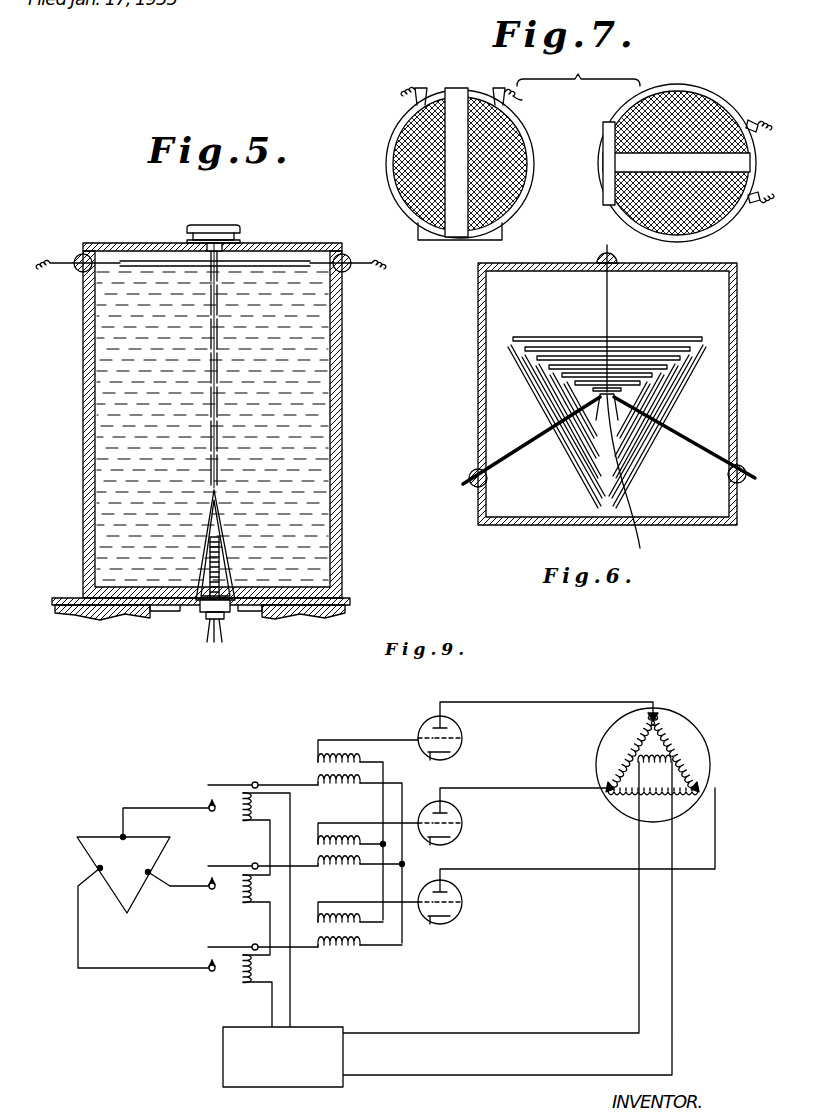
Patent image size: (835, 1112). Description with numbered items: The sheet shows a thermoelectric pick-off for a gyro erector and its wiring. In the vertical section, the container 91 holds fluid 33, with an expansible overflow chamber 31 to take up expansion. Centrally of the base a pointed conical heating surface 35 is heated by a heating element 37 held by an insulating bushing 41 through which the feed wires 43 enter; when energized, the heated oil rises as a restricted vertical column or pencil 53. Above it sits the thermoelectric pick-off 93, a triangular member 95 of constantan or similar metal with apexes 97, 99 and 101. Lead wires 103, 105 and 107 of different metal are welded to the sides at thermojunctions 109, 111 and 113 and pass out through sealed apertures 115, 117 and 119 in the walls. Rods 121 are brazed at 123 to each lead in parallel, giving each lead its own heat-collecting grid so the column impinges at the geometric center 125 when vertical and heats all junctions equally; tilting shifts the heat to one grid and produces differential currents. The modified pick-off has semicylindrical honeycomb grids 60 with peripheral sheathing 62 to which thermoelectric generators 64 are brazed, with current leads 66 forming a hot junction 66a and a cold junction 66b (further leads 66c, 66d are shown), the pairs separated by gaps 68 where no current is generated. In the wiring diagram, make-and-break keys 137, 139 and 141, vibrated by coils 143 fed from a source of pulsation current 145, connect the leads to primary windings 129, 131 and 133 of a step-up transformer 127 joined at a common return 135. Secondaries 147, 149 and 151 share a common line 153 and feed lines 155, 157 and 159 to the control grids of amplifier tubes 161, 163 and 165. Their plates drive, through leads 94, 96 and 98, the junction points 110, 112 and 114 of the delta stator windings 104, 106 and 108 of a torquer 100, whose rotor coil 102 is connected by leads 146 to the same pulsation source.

In FIG. 5, the expansible overflow chamber 31 is at (196, 607).
In FIG. 5, the fluid 33 is at (303, 396).
In FIG. 5, the conical heating surface 35 is at (224, 523).
In FIG. 5, the heating element 37 is at (232, 231).
In FIG. 5, the insulating bushing 41 is at (230, 620).
In FIG. 5, the feed wires 43 is at (208, 633).
In FIG. 5, the vertical column or pencil 53 is at (218, 386).
In FIG. 7, the semicylindrical cellular collector or grid 60 is at (405, 130).
In FIG. 7, the peripheral sheathing 62 is at (522, 128).
In FIG. 7, the thermoelectric generator 64 is at (462, 85).
In FIG. 7, the current leads 66 is at (502, 85).
In FIG. 7, the hot junction 66a is at (513, 97).
In FIG. 7, the cold junction 66b is at (440, 80).
In FIG. 7, the tab 66c is at (760, 126).
In FIG. 7, the tab 66d is at (760, 194).
In FIG. 7, the gap 68 is at (456, 100).
In FIG. 5, the container 91 is at (335, 242).
In FIG. 6, the container 91 is at (744, 314).
In FIG. 5, the thermoelectric pick-off 93 is at (130, 262).
In FIG. 6, the thermoelectric pick-off 93 is at (663, 338).
In FIG. 9, the thermoelectric pick-off 93 is at (123, 875).
In FIG. 9, the lead 94 is at (548, 702).
In FIG. 6, the triangular member 95 is at (662, 386).
In FIG. 9, the triangular member 95 is at (140, 890).
In FIG. 9, the lead 96 is at (534, 788).
In FIG. 6, the apex 97 is at (670, 360).
In FIG. 9, the apex 97 is at (170, 838).
In FIG. 9, the lead 98 is at (530, 869).
In FIG. 6, the apex 99 is at (530, 362).
In FIG. 9, the apex 99 is at (77, 837).
In FIG. 9, the torquer 100 is at (663, 753).
In FIG. 6, the apex 101 is at (592, 472).
In FIG. 9, the apex 101 is at (127, 913).
In FIG. 9, the rotor coil 102 is at (692, 740).
In FIG. 5, the lead wire 103 is at (378, 271).
In FIG. 6, the lead wire 103 is at (716, 468).
In FIG. 9, the lead wire 103 is at (168, 886).
In FIG. 9, the stator winding 104 is at (620, 735).
In FIG. 6, the lead wire 105 is at (608, 300).
In FIG. 9, the lead wire 105 is at (123, 820).
In FIG. 9, the stator winding 106 is at (690, 753).
In FIG. 5, the lead wire 107 is at (68, 272).
In FIG. 6, the lead wire 107 is at (490, 470).
In FIG. 9, the lead wire 107 is at (78, 886).
In FIG. 9, the stator winding 108 is at (150, 871).
In FIG. 6, the thermojunction 109 is at (633, 455).
In FIG. 9, the junction point 110 is at (660, 716).
In FIG. 6, the thermojunction 111 is at (600, 372).
In FIG. 9, the thermojunction 111 is at (123, 836).
In FIG. 9, the junction point 112 is at (606, 790).
In FIG. 6, the thermojunction 113 is at (562, 416).
In FIG. 9, the thermojunction 113 is at (98, 867).
In FIG. 9, the junction point 114 is at (700, 788).
In FIG. 5, the aperture 115 is at (349, 258).
In FIG. 6, the aperture 115 is at (747, 477).
In FIG. 6, the aperture 117 is at (612, 262).
In FIG. 5, the aperture 119 is at (75, 261).
In FIG. 6, the aperture 119 is at (470, 476).
In FIG. 6, the rods 121 is at (527, 342).
In FIG. 6, the weld 123 is at (610, 344).
In FIG. 6, the geometric center 125 is at (638, 481).
In FIG. 9, the step-up transformer 127 is at (349, 825).
In FIG. 9, the primary winding 129 is at (345, 785).
In FIG. 9, the primary winding 131 is at (368, 857).
In FIG. 9, the primary winding 133 is at (357, 925).
In FIG. 9, the common return 135 is at (405, 864).
In FIG. 9, the make-and-break key 137 is at (232, 784).
In FIG. 9, the make-and-break key 139 is at (243, 865).
In FIG. 9, the make-and-break key 141 is at (240, 944).
In FIG. 9, the coils 143 is at (252, 795).
In FIG. 9, the source of pulsation current 145 is at (322, 1027).
In FIG. 9, the leads 146 is at (505, 1033).
In FIG. 9, the secondary winding 147 is at (318, 745).
In FIG. 9, the secondary winding 149 is at (326, 838).
In FIG. 9, the secondary winding 151 is at (340, 910).
In FIG. 9, the common line 153 is at (383, 770).
In FIG. 9, the line 155 is at (345, 740).
In FIG. 9, the line 157 is at (405, 822).
In FIG. 9, the line 159 is at (415, 925).
In FIG. 9, the amplifier tube 161 is at (421, 722).
In FIG. 9, the amplifier tube 163 is at (463, 826).
In FIG. 9, the amplifier tube 165 is at (463, 906).